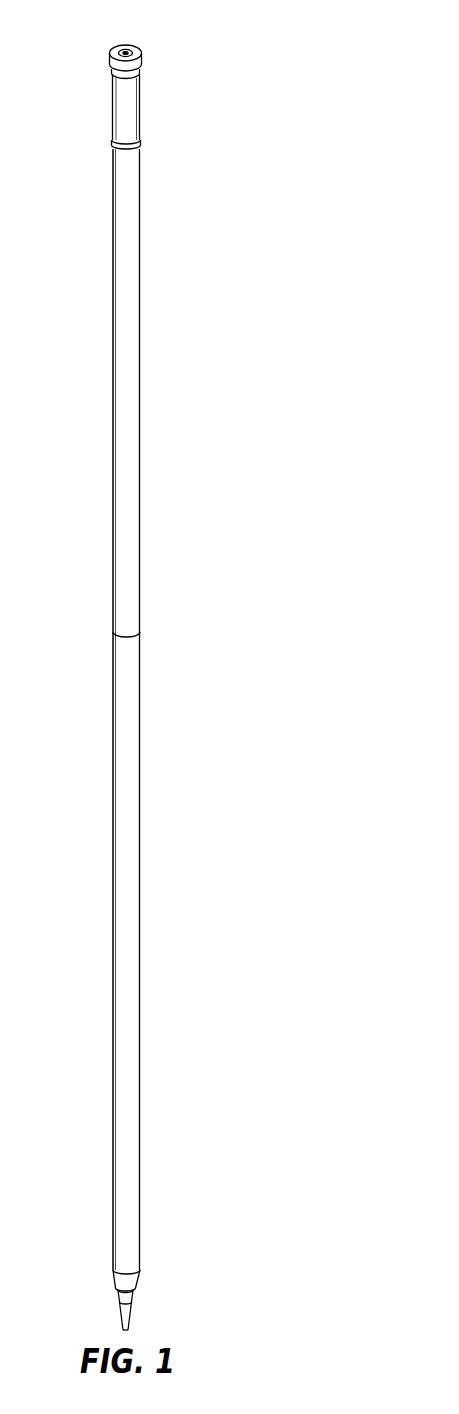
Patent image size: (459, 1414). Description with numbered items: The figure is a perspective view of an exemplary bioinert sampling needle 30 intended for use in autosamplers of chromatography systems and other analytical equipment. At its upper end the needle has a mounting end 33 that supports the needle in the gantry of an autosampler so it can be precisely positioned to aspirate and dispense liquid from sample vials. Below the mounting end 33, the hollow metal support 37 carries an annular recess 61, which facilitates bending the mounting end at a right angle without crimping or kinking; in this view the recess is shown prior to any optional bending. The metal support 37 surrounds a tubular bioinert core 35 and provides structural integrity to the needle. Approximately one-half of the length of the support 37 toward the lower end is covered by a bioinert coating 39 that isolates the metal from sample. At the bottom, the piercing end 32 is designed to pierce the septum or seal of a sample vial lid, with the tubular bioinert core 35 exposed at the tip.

The sampling needle 30 is at (155, 40).
The mounting end 33 is at (141, 100).
The annular recess 61 is at (113, 141).
The metal support 37 is at (125, 462).
The bioinert coating 39 is at (130, 636).
The piercing end 32 is at (143, 1262).
The tubular bioinert core 35 is at (134, 1300).